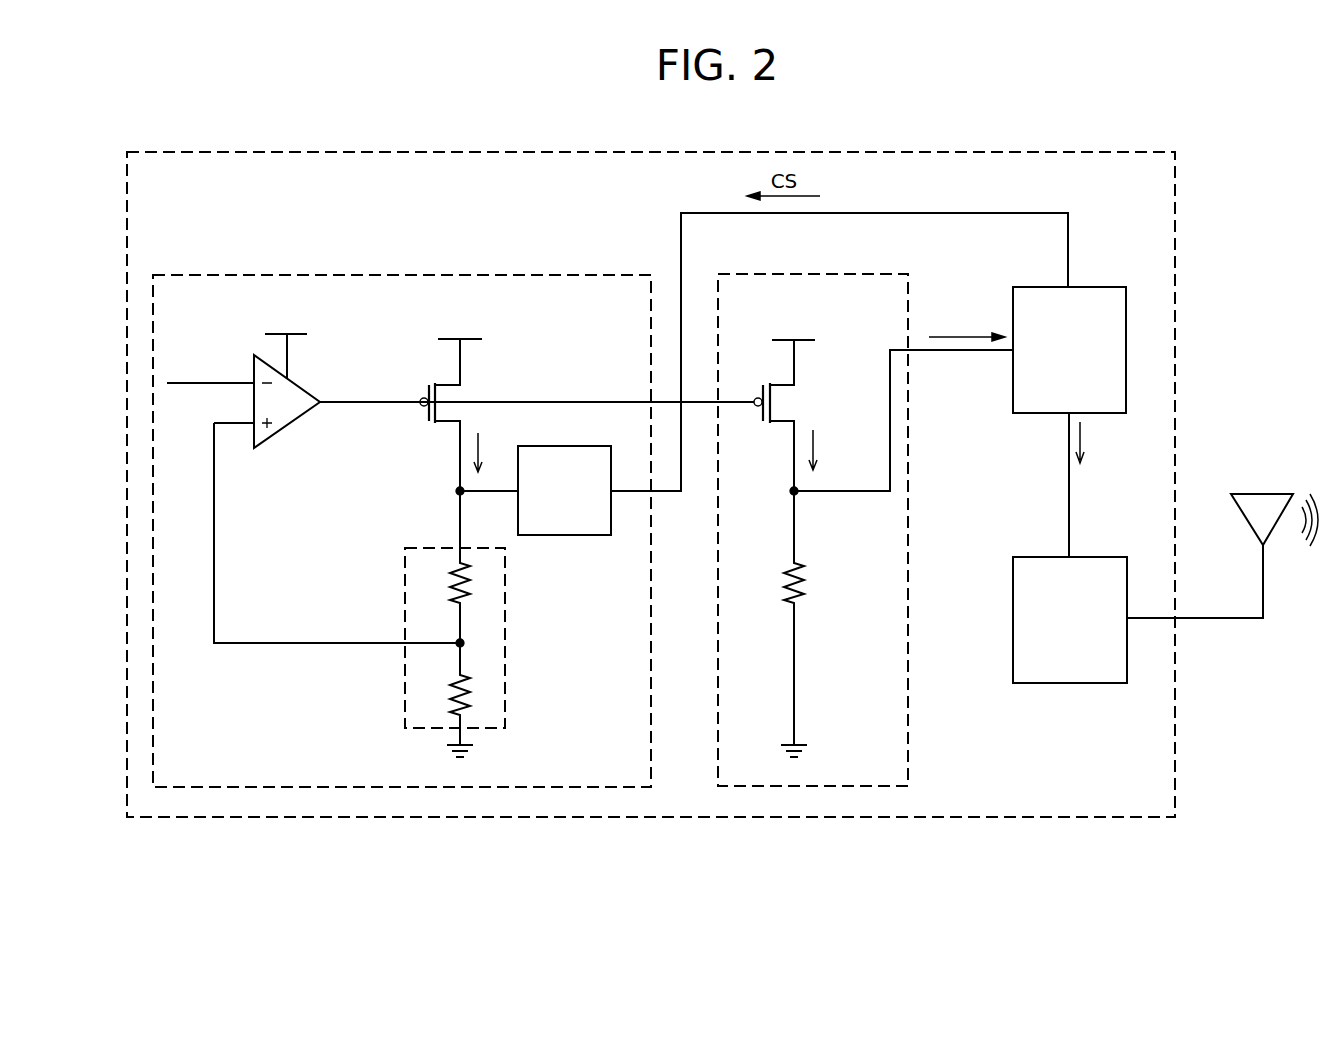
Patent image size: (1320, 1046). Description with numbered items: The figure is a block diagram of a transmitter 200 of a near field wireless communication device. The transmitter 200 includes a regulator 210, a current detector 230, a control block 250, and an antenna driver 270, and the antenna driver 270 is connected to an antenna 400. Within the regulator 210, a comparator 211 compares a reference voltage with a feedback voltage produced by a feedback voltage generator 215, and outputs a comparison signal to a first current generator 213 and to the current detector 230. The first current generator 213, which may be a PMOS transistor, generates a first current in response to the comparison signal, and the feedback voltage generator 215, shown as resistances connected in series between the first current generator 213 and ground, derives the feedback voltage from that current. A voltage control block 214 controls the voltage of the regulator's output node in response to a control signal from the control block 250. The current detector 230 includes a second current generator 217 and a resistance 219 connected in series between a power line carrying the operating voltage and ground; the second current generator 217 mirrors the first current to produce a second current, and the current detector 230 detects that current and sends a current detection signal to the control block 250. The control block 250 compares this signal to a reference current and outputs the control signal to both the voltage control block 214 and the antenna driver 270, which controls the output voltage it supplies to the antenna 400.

The transmitter 200 is at (1125, 151).
The regulator 210 is at (548, 275).
The comparator 211 is at (305, 392).
The first current generator 213 is at (458, 398).
The voltage control block 214 is at (590, 446).
The feedback voltage generator 215 is at (505, 592).
The second current generator 217 is at (790, 400).
The resistance 219 is at (810, 583).
The current detector 230 is at (877, 274).
The control block 250 is at (1108, 287).
The antenna driver 270 is at (1105, 557).
The antenna 400 is at (1263, 492).